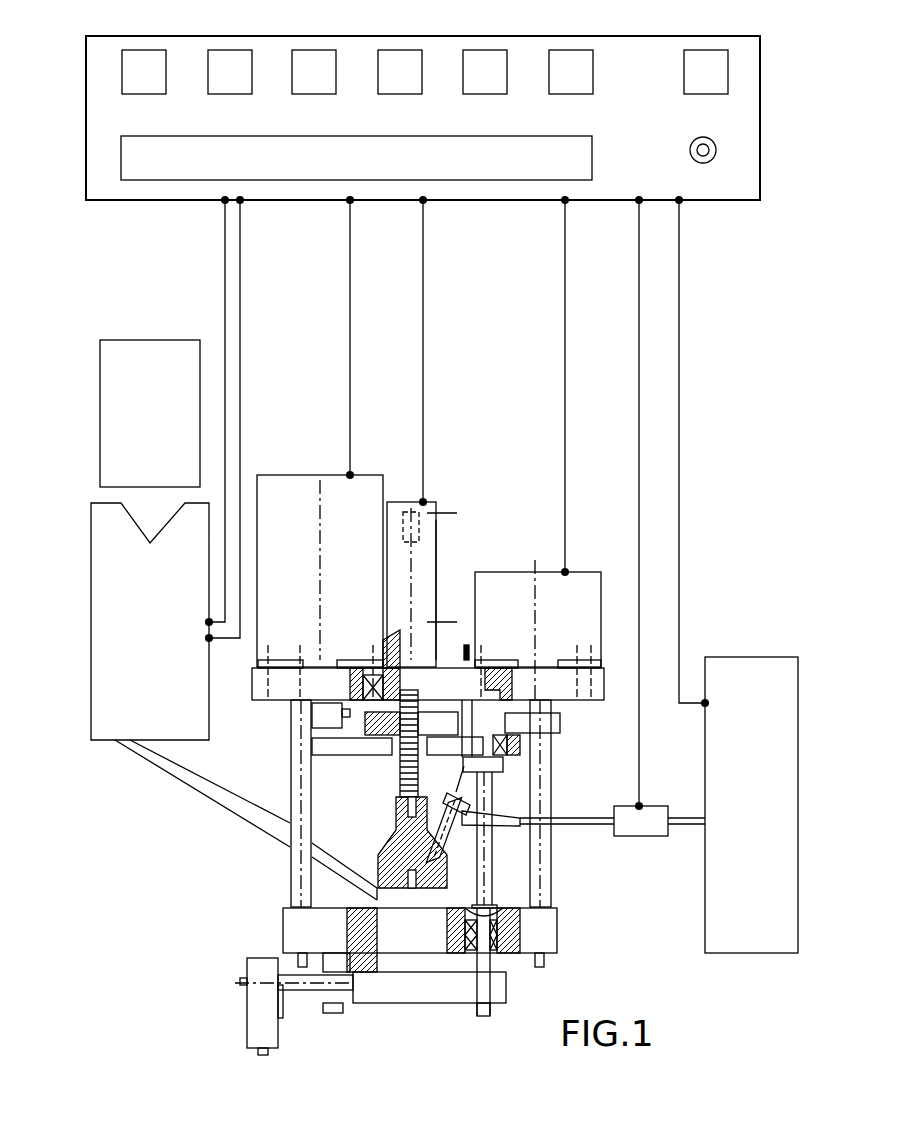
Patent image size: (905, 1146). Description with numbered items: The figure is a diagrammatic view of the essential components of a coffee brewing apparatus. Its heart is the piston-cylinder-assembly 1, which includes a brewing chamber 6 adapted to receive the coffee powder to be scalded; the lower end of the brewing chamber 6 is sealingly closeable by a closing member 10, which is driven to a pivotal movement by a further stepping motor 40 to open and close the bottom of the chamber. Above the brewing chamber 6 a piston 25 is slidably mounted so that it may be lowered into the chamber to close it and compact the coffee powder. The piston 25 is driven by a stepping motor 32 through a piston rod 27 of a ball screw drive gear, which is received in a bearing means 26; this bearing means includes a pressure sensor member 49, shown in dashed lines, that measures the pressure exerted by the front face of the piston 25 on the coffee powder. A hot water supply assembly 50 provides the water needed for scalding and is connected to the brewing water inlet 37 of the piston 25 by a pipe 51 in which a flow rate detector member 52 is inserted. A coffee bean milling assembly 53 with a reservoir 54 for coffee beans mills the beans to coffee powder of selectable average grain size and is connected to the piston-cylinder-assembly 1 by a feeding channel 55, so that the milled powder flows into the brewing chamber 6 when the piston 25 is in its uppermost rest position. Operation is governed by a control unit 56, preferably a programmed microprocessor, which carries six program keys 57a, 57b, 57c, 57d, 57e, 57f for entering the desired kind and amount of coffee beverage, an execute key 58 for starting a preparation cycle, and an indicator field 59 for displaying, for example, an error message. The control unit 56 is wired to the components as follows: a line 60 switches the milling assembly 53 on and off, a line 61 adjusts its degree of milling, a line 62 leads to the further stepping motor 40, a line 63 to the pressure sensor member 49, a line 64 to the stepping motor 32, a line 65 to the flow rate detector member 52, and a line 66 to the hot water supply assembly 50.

The piston-cylinder-assembly 1 is at (590, 922).
The brewing chamber 6 is at (428, 960).
The closing member 10 is at (396, 990).
The piston 25 is at (386, 860).
The bearing means 26 is at (425, 568).
The piston rod 27 is at (400, 773).
The stepping motor 32 is at (514, 590).
The brewing water inlet 37 is at (452, 822).
The further stepping motor 40 is at (298, 500).
The pressure sensor member 49 is at (404, 518).
The hot water supply assembly 50 is at (745, 692).
The pipe 51 is at (683, 828).
The flow rate detector member 52 is at (637, 827).
The coffee bean milling assembly 53 is at (116, 707).
The reservoir 54 is at (145, 365).
The feeding channel 55 is at (214, 780).
The control unit 56 is at (433, 36).
The program key 57a is at (144, 72).
The program key 57b is at (230, 72).
The program key 57c is at (314, 72).
The program key 57d is at (400, 72).
The program key 57e is at (485, 72).
The program key 57f is at (571, 72).
The execute key 58 is at (706, 72).
The indicator field 59 is at (577, 154).
The line 60 is at (225, 270).
The line 61 is at (241, 262).
The line 62 is at (350, 347).
The line 63 is at (423, 224).
The line 64 is at (565, 355).
The line 65 is at (639, 279).
The line 66 is at (679, 294).